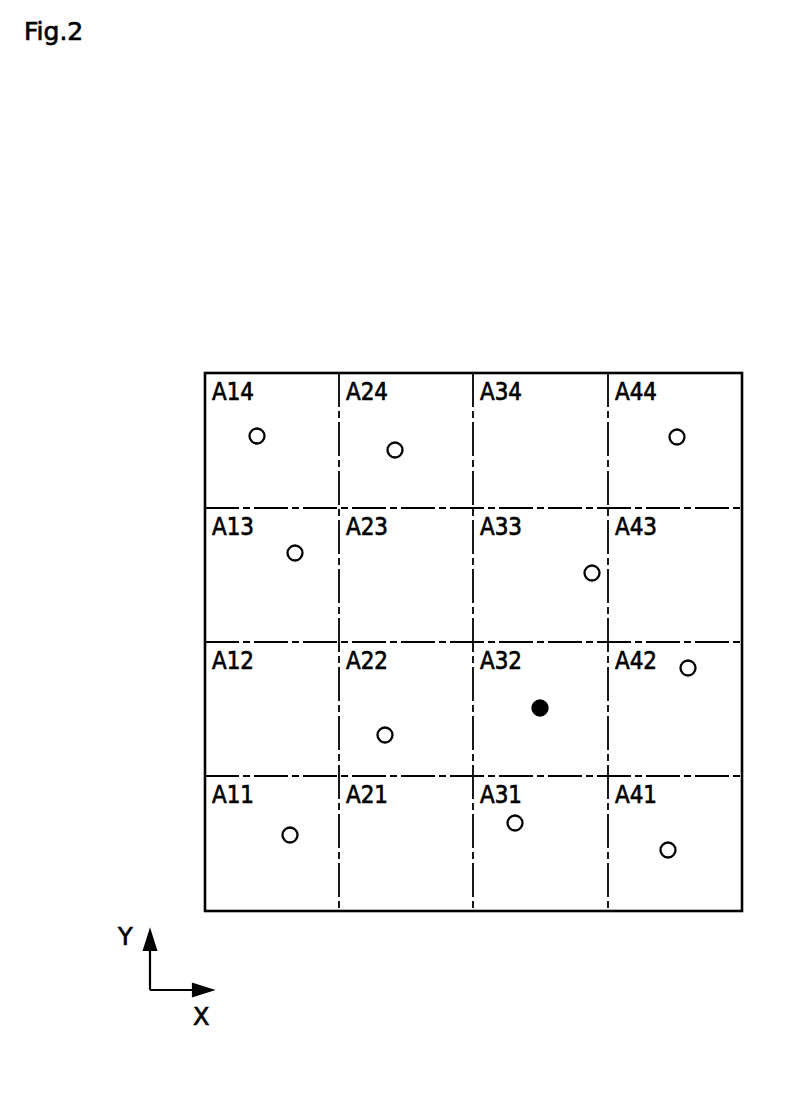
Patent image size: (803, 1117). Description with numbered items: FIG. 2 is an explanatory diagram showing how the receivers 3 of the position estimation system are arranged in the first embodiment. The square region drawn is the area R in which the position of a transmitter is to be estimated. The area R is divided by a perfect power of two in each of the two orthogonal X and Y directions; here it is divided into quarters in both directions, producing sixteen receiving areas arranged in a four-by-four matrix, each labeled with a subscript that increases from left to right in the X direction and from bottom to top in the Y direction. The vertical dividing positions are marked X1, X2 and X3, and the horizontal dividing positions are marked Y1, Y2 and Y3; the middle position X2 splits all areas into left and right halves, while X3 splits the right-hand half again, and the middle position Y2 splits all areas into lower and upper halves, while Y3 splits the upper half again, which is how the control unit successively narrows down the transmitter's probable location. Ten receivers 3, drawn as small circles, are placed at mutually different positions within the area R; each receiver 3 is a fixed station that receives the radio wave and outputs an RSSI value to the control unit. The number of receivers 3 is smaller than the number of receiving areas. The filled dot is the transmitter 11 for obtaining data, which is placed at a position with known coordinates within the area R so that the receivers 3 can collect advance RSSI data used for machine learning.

The receiver 3 is at (266, 434).
The transmitter for obtaining data 11 is at (547, 715).
The area R is at (693, 373).
The X-direction dividing line X1 is at (338, 400).
The middle position in the X direction X2 is at (473, 400).
The middle position in the X direction X3 is at (607, 400).
The Y-direction dividing line Y1 is at (235, 775).
The middle position in the Y direction Y2 is at (235, 641).
The middle position in the Y direction Y3 is at (235, 507).